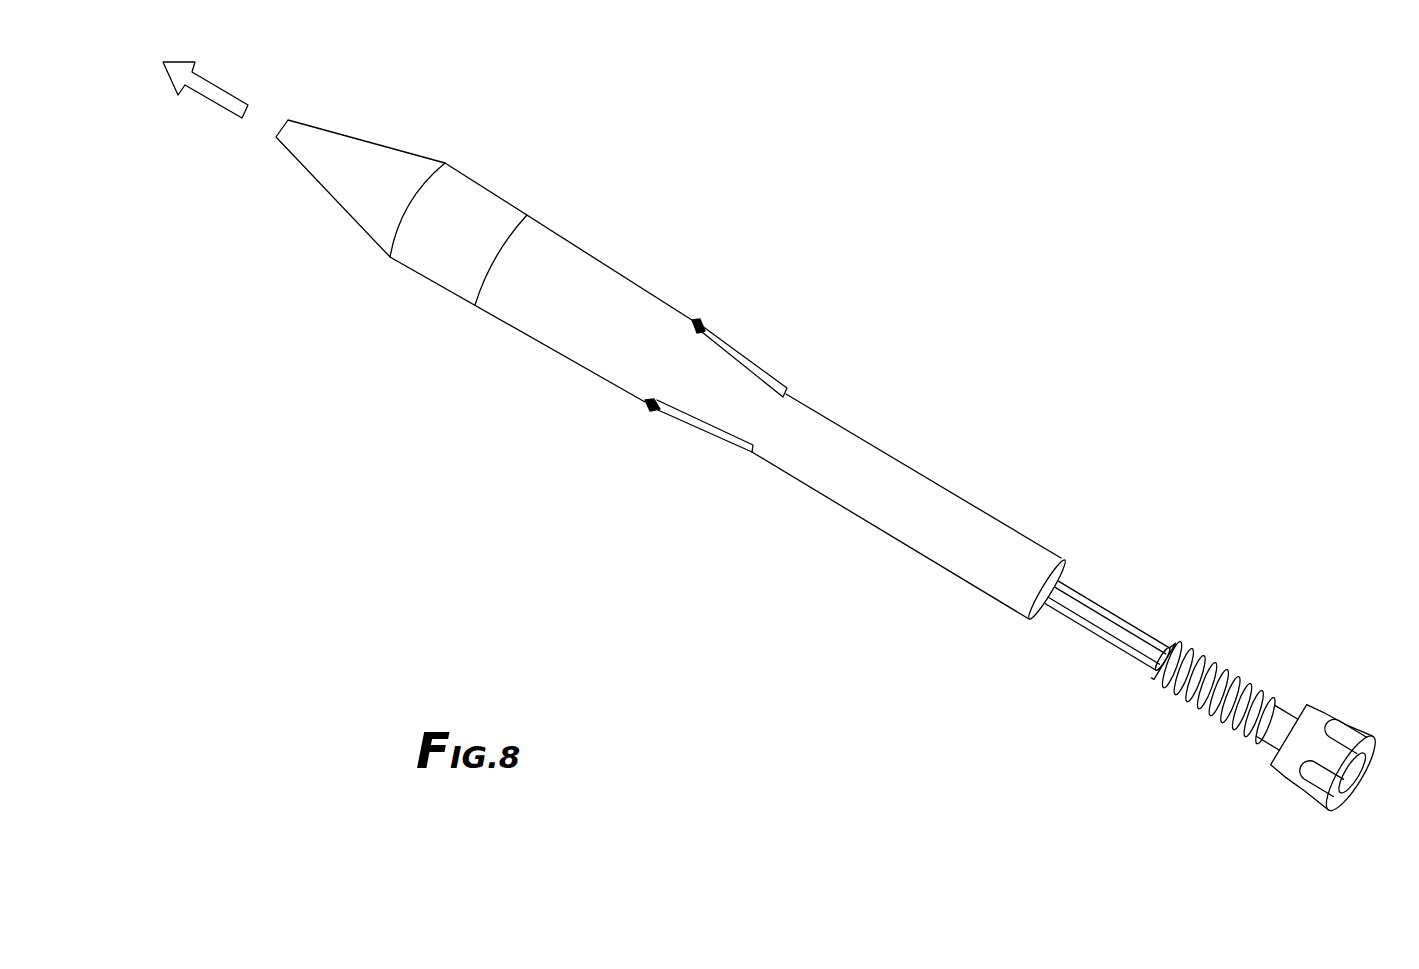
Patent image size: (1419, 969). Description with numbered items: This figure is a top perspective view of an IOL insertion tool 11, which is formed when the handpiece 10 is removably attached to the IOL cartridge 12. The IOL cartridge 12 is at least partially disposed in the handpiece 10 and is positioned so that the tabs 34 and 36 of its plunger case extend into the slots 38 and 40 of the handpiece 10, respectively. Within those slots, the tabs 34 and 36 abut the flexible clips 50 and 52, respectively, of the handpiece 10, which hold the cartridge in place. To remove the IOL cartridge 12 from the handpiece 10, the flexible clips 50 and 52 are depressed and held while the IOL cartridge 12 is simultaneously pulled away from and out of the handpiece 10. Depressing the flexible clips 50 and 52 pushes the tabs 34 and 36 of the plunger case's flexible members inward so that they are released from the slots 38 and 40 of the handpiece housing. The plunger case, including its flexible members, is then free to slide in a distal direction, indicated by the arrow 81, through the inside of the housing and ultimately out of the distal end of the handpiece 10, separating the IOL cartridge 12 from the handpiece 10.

The handpiece 10 is at (822, 485).
The IOL insertion tool 11 is at (829, 430).
The IOL cartridge 12 is at (413, 133).
The tab 34 is at (650, 410).
The tab 36 is at (703, 322).
The slot 38 is at (632, 414).
The slot 40 is at (716, 306).
The flexible clip 50 is at (702, 432).
The flexible clip 52 is at (667, 253).
The arrow 81 is at (225, 90).